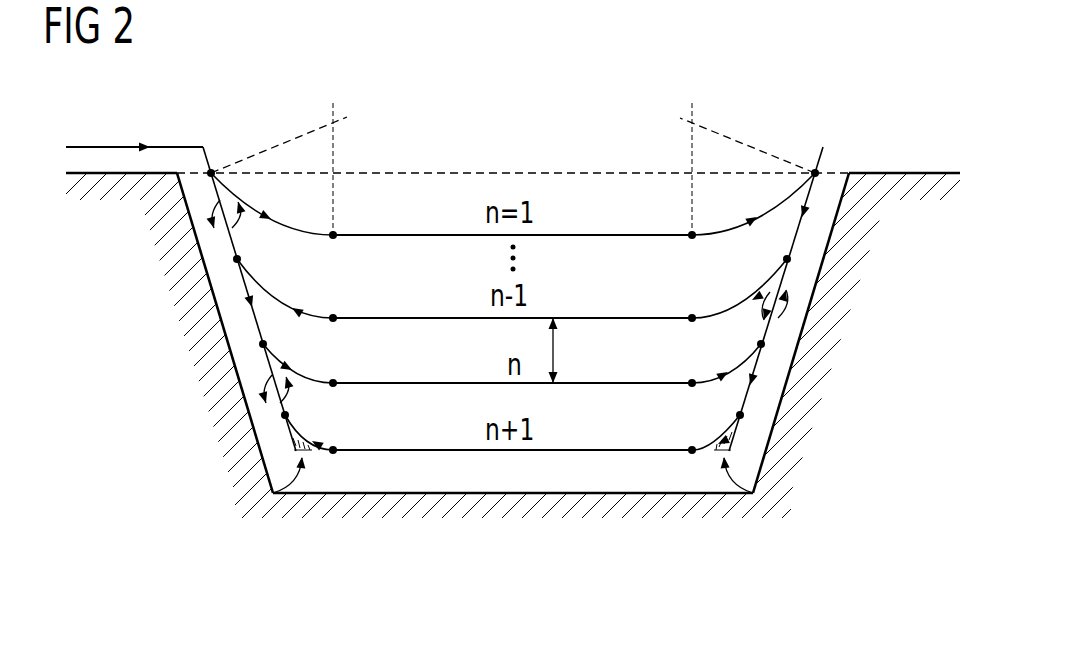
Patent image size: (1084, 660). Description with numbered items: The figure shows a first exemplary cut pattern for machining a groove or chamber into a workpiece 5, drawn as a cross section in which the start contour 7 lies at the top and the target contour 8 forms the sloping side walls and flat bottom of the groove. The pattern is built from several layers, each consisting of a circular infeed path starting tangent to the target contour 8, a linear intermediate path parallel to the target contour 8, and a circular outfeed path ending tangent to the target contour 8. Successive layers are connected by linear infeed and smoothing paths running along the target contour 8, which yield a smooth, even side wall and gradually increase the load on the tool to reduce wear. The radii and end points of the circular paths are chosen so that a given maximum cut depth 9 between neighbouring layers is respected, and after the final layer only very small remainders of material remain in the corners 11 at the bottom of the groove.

The workpiece 5 is at (937, 355).
The start contour 7 is at (512, 171).
The target contour 8 is at (228, 299).
The maximum cut depth 9 is at (555, 352).
The corners 11 is at (273, 493).